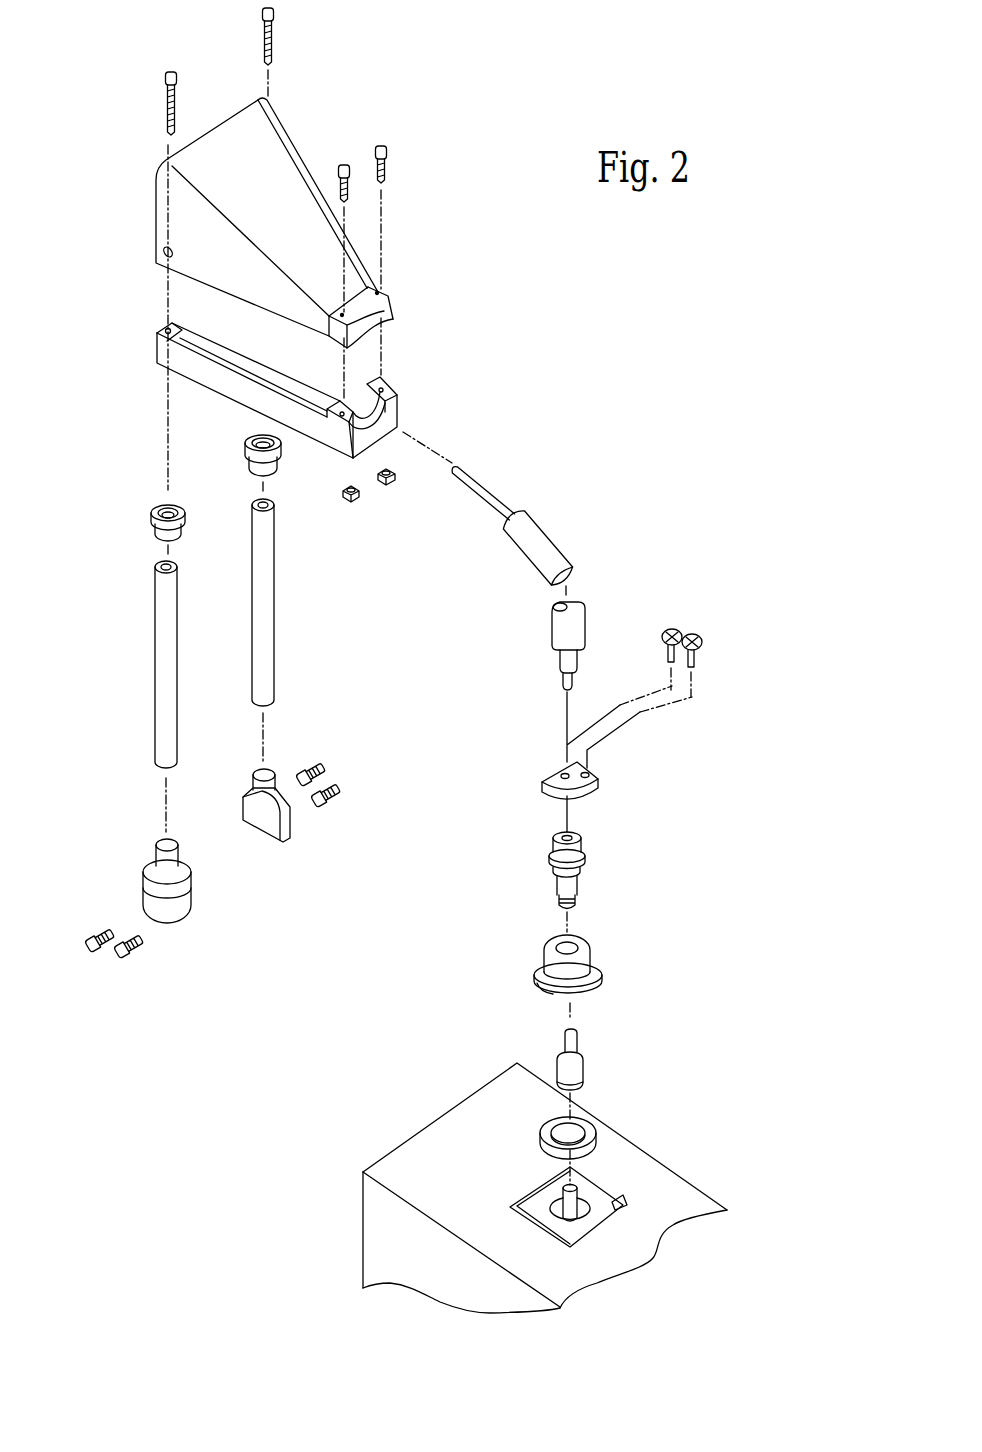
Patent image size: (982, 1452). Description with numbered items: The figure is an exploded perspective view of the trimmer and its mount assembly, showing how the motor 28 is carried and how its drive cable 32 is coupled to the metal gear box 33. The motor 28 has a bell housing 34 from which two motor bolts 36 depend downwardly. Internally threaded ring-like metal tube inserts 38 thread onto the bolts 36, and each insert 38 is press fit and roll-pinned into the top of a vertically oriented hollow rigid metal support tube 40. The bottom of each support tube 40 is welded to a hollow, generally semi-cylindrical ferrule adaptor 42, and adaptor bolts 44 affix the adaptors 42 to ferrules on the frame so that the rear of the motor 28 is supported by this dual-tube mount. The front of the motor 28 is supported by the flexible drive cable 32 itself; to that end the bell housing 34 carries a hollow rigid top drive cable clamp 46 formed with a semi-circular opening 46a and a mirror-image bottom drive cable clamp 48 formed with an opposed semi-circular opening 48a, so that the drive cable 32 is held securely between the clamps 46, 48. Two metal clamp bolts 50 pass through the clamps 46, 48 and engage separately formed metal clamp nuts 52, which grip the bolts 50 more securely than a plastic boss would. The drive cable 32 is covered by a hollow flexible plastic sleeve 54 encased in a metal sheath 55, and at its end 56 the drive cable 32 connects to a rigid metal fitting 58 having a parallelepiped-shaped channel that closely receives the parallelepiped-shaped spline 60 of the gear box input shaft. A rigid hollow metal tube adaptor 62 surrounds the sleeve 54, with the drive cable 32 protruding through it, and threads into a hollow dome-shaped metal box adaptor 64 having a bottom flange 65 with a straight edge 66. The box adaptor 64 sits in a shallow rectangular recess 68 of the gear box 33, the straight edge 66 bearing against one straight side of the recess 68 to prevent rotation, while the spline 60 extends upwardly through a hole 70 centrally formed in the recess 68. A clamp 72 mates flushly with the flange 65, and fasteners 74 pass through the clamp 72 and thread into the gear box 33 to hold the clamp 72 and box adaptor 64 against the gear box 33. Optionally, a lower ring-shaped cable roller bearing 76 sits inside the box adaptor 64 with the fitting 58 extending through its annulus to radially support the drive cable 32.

The motor 28 is at (455, 236).
The drive cable 32 is at (480, 478).
The gear box 33 is at (447, 1120).
The bell housing 34 is at (267, 201).
The motor bolts 36 is at (166, 108).
The tube inserts 38 is at (155, 510).
The support tubes 40 is at (157, 615).
The ferrule adaptor 42 is at (153, 872).
The adaptor bolts 44 is at (142, 943).
The top drive cable clamp 46 is at (393, 302).
The semi-circular opening 46a is at (380, 335).
The bottom drive cable clamp 48 is at (400, 428).
The semi-circular opening 48a is at (373, 414).
The clamp bolts 50 is at (386, 167).
The clamp nuts 52 is at (389, 484).
The sleeve 54 is at (559, 663).
The sheath 55 is at (547, 526).
The end of drive cable 56 is at (562, 683).
The fitting 58 is at (584, 1068).
The spline 60 is at (580, 1200).
The tube adaptor 62 is at (582, 847).
The box adaptor 64 is at (583, 949).
The bottom flange 65 is at (602, 969).
The straight edge 66 is at (548, 978).
The recess 68 is at (624, 1207).
The hole 70 is at (612, 1207).
The clamp 72 is at (598, 788).
The fasteners 74 is at (707, 643).
The cable roller bearing 76 is at (588, 1125).